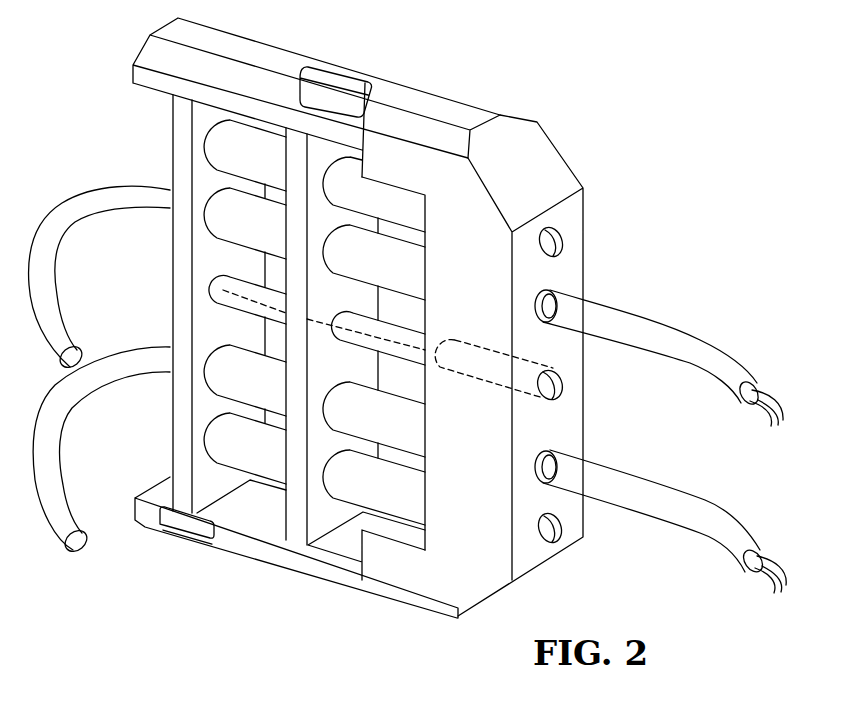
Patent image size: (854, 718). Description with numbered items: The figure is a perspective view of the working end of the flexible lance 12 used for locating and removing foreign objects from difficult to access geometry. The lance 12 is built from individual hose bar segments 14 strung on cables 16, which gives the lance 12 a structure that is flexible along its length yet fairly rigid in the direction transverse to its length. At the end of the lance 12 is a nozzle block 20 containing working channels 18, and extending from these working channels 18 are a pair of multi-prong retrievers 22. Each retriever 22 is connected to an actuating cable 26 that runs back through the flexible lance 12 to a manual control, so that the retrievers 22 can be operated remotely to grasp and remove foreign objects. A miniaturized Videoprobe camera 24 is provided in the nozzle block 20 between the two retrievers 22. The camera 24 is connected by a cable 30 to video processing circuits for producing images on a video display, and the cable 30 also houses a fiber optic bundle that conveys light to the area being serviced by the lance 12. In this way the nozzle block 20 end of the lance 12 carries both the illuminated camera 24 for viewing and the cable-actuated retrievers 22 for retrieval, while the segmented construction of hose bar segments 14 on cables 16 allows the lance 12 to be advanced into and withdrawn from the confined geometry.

The flexible lance 12 is at (325, 37).
The hose bar segment 14 is at (303, 62).
The cable 16 is at (370, 84).
The working channel 18 is at (551, 290).
The nozzle block 20 is at (563, 212).
The multi-prong retriever 22 is at (763, 388).
The Videoprobe camera 24 is at (492, 382).
The actuating cable 26 is at (120, 183).
The cable 30 is at (240, 310).